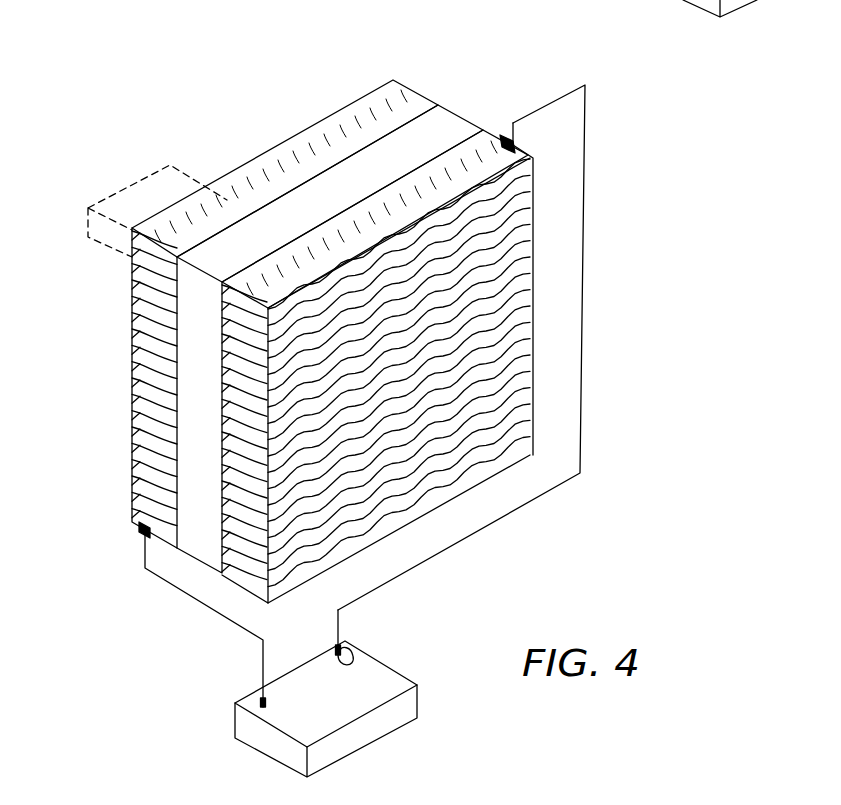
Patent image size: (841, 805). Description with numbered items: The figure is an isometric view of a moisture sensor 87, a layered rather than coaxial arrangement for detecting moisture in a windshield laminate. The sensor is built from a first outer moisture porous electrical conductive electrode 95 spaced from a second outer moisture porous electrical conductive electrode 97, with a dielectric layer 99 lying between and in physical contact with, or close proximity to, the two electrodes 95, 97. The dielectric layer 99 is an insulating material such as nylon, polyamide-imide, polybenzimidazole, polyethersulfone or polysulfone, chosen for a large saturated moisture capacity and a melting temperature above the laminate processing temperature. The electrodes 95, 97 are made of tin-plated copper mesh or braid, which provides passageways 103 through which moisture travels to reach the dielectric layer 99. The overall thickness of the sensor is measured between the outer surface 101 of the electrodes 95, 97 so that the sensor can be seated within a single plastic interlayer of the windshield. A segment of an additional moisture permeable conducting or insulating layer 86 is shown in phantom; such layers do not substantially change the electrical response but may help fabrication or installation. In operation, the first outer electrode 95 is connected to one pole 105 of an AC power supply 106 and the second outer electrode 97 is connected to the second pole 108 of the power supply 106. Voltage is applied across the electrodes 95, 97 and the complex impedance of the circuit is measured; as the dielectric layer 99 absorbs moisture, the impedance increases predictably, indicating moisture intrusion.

The moisture permeable conducting or insulating layer 86 is at (73, 214).
The moisture sensor 87 is at (216, 73).
The first outer moisture porous electrical conductive electrode 95 is at (357, 112).
The second outer moisture porous electrical conductive electrode 97 is at (505, 138).
The dielectric layer 99 is at (460, 124).
The outer surface 101 is at (231, 173).
The passageways 103 is at (532, 256).
The pole of AC power supply 105 is at (350, 652).
The AC power supply 106 is at (252, 724).
The pole of AC power supply 108 is at (263, 702).